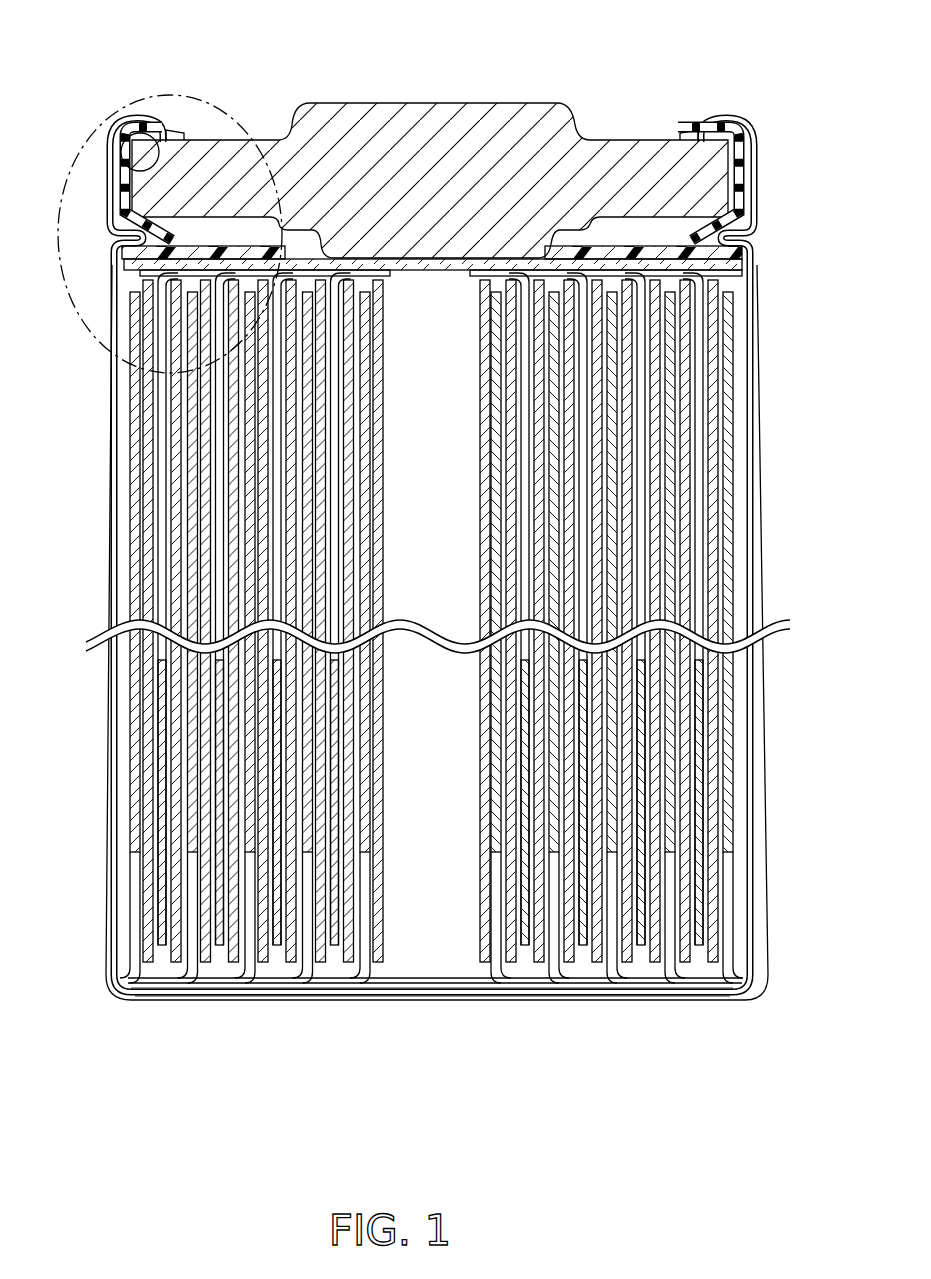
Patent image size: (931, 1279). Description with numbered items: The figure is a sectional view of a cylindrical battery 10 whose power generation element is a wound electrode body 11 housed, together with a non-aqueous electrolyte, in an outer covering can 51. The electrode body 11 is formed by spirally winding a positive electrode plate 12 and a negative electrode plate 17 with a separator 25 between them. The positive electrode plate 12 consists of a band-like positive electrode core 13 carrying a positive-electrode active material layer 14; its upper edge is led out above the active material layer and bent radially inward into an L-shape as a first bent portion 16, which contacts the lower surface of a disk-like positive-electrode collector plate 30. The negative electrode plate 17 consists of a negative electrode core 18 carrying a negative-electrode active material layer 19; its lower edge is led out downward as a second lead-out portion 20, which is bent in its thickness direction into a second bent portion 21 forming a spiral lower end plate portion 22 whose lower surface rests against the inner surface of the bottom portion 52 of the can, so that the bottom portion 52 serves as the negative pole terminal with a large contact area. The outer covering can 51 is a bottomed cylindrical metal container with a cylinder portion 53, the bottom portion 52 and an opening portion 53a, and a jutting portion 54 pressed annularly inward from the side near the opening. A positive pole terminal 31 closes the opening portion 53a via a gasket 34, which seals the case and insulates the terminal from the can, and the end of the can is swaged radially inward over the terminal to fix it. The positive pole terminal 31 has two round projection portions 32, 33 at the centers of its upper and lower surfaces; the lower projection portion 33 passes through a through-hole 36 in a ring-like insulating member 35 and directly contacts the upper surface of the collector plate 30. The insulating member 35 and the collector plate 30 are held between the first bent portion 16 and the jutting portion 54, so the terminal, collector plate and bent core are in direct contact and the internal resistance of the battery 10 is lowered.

The cylindrical battery 10 is at (436, 526).
The electrode body 11 is at (470, 653).
The positive electrode plate 12 is at (712, 264).
The positive electrode core 13 is at (718, 540).
The positive-electrode active material layer 14 is at (720, 580).
The first bent portion 16 is at (662, 247).
The negative electrode plate 17 is at (735, 396).
The negative electrode core 18 is at (760, 428).
The negative-electrode active material layer 19 is at (750, 467).
The second lead-out portion 20 is at (750, 1001).
The second bent portion 21 is at (712, 992).
The lower end plate portion 22 is at (688, 984).
The separator 25 is at (716, 300).
The positive-electrode collector plate 30 is at (401, 177).
The positive pole terminal 31 is at (511, 98).
The projection portion 32 is at (436, 122).
The projection portion 33 is at (360, 256).
The gasket 34 is at (124, 150).
The insulating member 35 is at (236, 247).
The through-hole 36 is at (557, 255).
The outer covering can 51 is at (436, 543).
The bottom portion 52 is at (440, 1000).
The cylinder portion 53 is at (398, 515).
The opening portion 53a is at (156, 112).
The jutting portion 54 is at (196, 225).